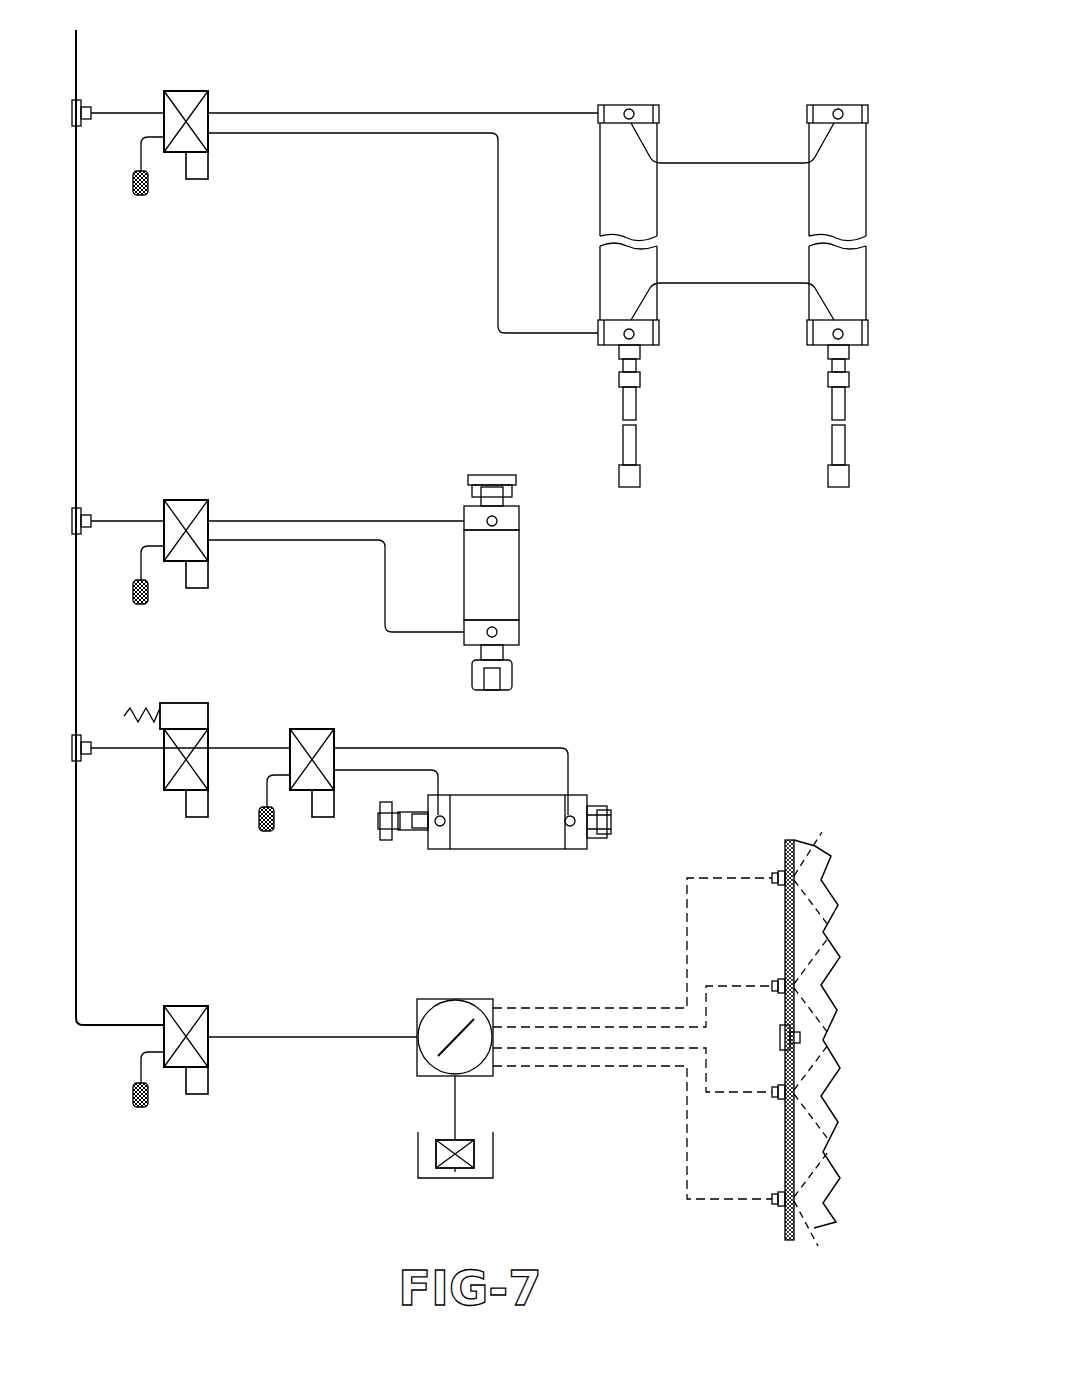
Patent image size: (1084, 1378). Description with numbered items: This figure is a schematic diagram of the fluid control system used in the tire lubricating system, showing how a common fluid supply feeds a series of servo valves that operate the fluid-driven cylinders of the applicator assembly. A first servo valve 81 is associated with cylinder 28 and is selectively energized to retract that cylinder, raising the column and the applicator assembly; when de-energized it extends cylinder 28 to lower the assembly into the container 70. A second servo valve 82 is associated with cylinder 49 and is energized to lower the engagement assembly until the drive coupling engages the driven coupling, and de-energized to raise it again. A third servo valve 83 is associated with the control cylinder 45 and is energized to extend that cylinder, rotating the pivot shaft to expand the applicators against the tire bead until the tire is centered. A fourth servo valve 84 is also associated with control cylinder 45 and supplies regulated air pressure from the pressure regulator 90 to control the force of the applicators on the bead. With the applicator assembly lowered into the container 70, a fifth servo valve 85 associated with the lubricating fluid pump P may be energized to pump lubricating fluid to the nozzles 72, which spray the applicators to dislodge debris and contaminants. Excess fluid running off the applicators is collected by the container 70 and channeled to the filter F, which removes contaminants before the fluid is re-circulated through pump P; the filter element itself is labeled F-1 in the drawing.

The cylinder 28 is at (645, 105).
The control cylinder 45 is at (502, 820).
The cylinder 49 is at (497, 586).
The container 70 is at (784, 838).
The nozzles 72 is at (773, 872).
The first servo valve 81 is at (187, 91).
The second servo valve 82 is at (187, 500).
The third servo valve 83 is at (312, 729).
The fourth servo valve 84 is at (197, 818).
The fifth servo valve 85 is at (187, 1006).
The pressure regulator 90 is at (184, 716).
The lubricating fluid pump P is at (455, 999).
The filter F is at (436, 1154).
The filter F-1 is at (474, 1154).